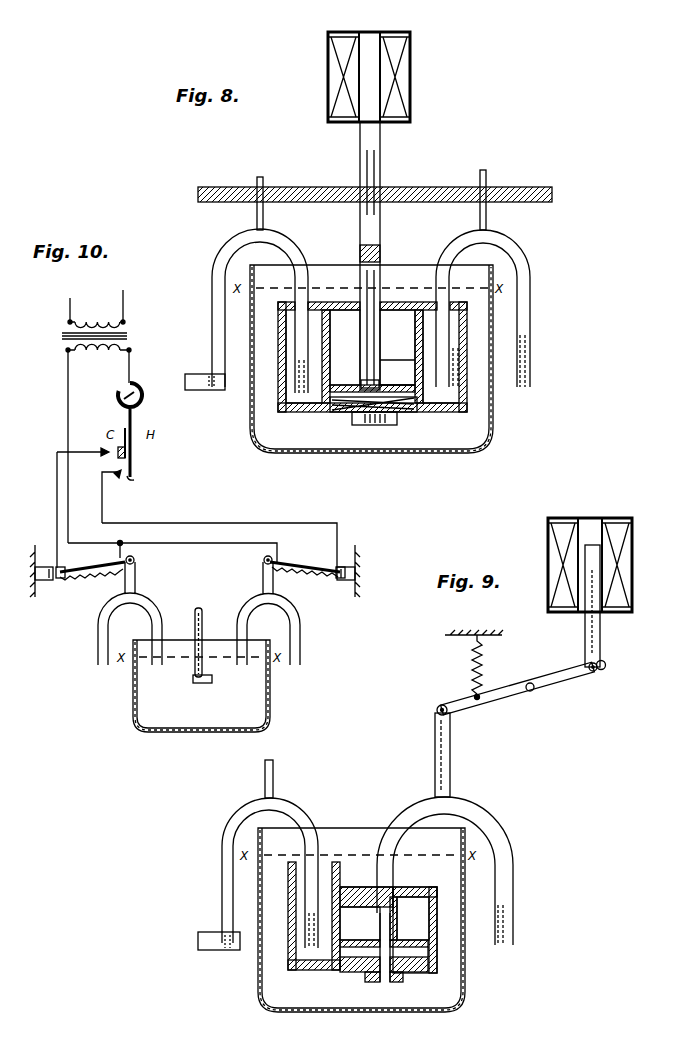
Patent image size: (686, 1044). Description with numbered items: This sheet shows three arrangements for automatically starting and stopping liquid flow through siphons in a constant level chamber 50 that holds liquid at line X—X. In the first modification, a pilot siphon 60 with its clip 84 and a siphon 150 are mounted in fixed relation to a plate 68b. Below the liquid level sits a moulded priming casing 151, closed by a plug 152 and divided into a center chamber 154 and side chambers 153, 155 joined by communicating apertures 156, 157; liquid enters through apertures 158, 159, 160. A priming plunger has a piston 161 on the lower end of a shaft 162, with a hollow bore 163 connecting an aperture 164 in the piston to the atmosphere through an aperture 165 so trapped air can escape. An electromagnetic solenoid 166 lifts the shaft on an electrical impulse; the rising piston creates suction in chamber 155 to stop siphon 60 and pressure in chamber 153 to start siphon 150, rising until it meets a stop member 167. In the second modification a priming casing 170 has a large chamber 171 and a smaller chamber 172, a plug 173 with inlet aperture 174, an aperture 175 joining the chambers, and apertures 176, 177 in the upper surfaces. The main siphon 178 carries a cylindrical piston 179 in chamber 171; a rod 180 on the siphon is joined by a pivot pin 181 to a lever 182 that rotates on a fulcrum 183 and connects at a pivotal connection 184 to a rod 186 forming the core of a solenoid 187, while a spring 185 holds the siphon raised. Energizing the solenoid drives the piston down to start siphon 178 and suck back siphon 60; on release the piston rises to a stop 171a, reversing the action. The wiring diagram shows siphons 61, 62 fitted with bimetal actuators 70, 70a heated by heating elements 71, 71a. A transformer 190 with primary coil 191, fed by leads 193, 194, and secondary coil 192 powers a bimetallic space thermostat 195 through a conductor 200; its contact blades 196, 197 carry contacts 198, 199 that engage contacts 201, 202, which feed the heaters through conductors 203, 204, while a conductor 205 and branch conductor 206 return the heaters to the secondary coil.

In FIG. 8, the constant level chamber 50 is at (271, 451).
In FIG. 10, the constant level chamber 50 is at (132, 712).
In FIG. 9, the constant level chamber 50 is at (263, 1009).
In FIG. 8, the pilot siphon 60 is at (212, 290).
In FIG. 10, the pilot siphon 60 is at (193, 613).
In FIG. 9, the pilot siphon 60 is at (233, 823).
In FIG. 10, the main flow control siphon 61 is at (300, 627).
In FIG. 10, the main flow control siphon 62 is at (98, 637).
In FIG. 8, the plate 68b is at (212, 186).
In FIG. 10, the hinged bimetal actuator 70 is at (300, 560).
In FIG. 10, the bimetal actuator 70a is at (84, 570).
In FIG. 10, the heating element 71 is at (310, 578).
In FIG. 10, the heating element 71a is at (85, 580).
In FIG. 8, the clip 84 is at (194, 380).
In FIG. 10, the clip 84 is at (208, 683).
In FIG. 9, the clip 84 is at (205, 932).
In FIG. 8, the siphon 150 is at (530, 296).
In FIG. 8, the priming casing 151 is at (434, 414).
In FIG. 8, the plug 152 is at (385, 425).
In FIG. 8, the side chamber 153 is at (448, 401).
In FIG. 8, the center chamber 154 is at (401, 304).
In FIG. 8, the side chamber 155 is at (292, 401).
In FIG. 8, the communicating aperture 156 is at (417, 320).
In FIG. 8, the communicating aperture 157 is at (340, 386).
In FIG. 8, the aperture 158 is at (296, 300).
In FIG. 8, the aperture 159 is at (358, 301).
In FIG. 8, the aperture 160 is at (446, 300).
In FIG. 8, the piston 161 is at (390, 392).
In FIG. 8, the shaft 162 is at (360, 229).
In FIG. 8, the hollow bore 163 is at (371, 357).
In FIG. 8, the aperture 164 is at (352, 412).
In FIG. 8, the aperture 165 is at (383, 262).
In FIG. 8, the electromagnetic solenoid 166 is at (404, 63).
In FIG. 8, the stop member 167 is at (357, 311).
In FIG. 9, the priming casing 170 is at (420, 888).
In FIG. 9, the large chamber 171 is at (421, 912).
In FIG. 9, the stop 171a is at (357, 886).
In FIG. 9, the smaller chamber 172 is at (302, 910).
In FIG. 9, the plug 173 is at (348, 968).
In FIG. 9, the inlet aperture 174 is at (380, 982).
In FIG. 9, the aperture 175 is at (338, 908).
In FIG. 9, the aperture 176 is at (303, 850).
In FIG. 9, the aperture 177 is at (368, 887).
In FIG. 9, the main siphon 178 is at (488, 822).
In FIG. 9, the cylindrical piston 179 is at (413, 900).
In FIG. 9, the rod 180 is at (450, 748).
In FIG. 9, the pivot pin 181 is at (437, 709).
In FIG. 9, the lever 182 is at (506, 697).
In FIG. 9, the fulcrum 183 is at (532, 691).
In FIG. 9, the pivotal connection 184 is at (596, 673).
In FIG. 9, the spring 185 is at (470, 653).
In FIG. 9, the rod 186 is at (601, 640).
In FIG. 9, the solenoid 187 is at (627, 561).
In FIG. 10, the transformer 190 is at (57, 345).
In FIG. 10, the primary coil 191 is at (99, 317).
In FIG. 10, the secondary coil 192 is at (99, 355).
In FIG. 10, the lead 193 is at (70, 304).
In FIG. 10, the lead 194 is at (123, 306).
In FIG. 10, the space thermostat 195 is at (143, 408).
In FIG. 10, the contact blade 196 is at (133, 448).
In FIG. 10, the contact blade 197 is at (117, 448).
In FIG. 10, the contact 198 is at (128, 478).
In FIG. 10, the contact 199 is at (105, 446).
In FIG. 10, the conductor 200 is at (132, 371).
In FIG. 10, the contact 201 is at (113, 481).
In FIG. 10, the contact 202 is at (107, 457).
In FIG. 10, the conductor 203 is at (210, 523).
In FIG. 10, the conductor 204 is at (57, 488).
In FIG. 10, the conductor 205 is at (68, 412).
In FIG. 10, the branch conductor 206 is at (122, 544).